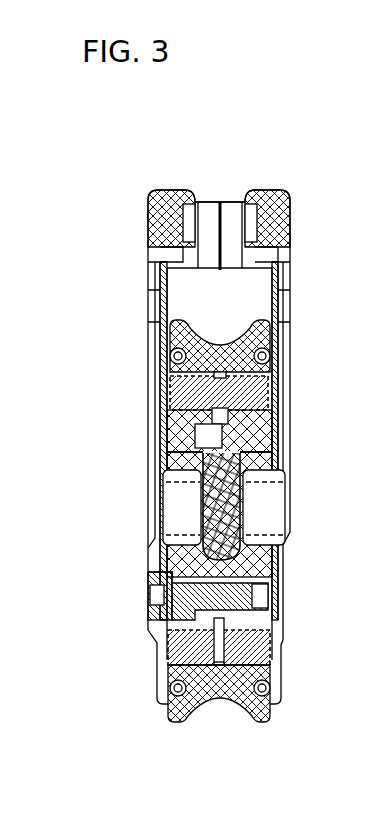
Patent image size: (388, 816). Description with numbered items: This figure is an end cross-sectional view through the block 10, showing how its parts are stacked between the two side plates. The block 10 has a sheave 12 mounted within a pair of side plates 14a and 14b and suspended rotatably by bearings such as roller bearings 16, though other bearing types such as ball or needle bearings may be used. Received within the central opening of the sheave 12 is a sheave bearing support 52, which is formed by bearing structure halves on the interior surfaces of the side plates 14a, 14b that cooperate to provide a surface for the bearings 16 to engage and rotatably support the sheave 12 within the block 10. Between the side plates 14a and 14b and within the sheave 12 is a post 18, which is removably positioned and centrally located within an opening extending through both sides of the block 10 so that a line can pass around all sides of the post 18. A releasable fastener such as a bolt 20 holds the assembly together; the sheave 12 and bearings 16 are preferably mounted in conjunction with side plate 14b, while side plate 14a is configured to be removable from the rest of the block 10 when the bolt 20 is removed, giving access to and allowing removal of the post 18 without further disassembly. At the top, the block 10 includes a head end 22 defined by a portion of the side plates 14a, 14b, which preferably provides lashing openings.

The block 10 is at (124, 192).
The sheave 12 is at (172, 710).
The side plate 14a is at (280, 307).
The side plate 14b is at (152, 323).
The roller bearings 16 is at (166, 655).
The post 18 is at (268, 515).
The bolt 20 is at (152, 580).
The head end 22 is at (252, 214).
The sheave bearing support 52 is at (162, 448).